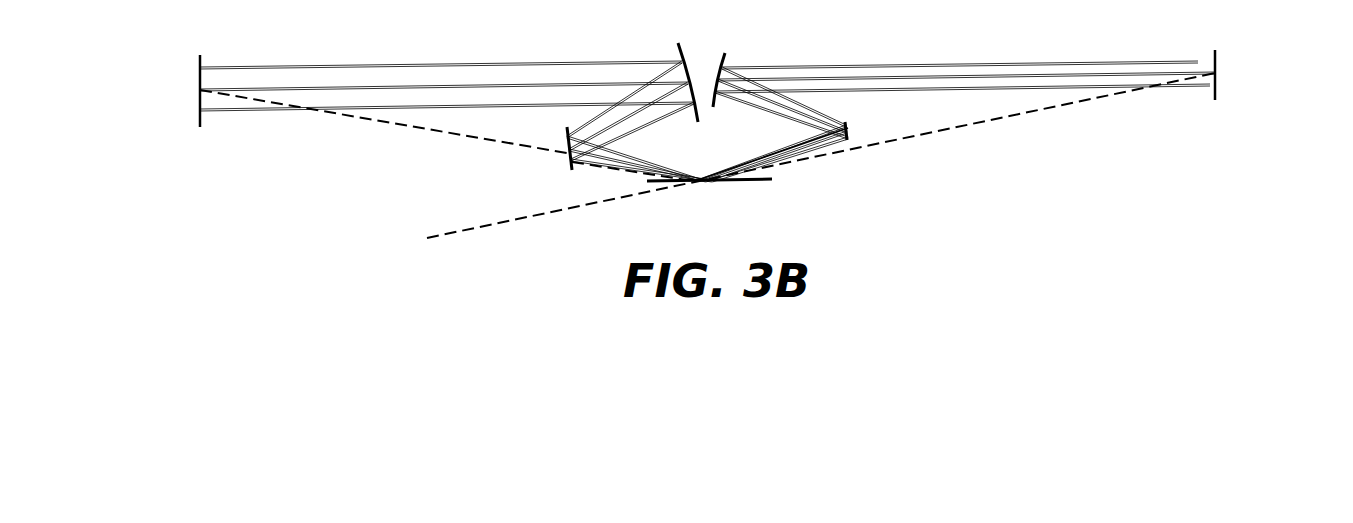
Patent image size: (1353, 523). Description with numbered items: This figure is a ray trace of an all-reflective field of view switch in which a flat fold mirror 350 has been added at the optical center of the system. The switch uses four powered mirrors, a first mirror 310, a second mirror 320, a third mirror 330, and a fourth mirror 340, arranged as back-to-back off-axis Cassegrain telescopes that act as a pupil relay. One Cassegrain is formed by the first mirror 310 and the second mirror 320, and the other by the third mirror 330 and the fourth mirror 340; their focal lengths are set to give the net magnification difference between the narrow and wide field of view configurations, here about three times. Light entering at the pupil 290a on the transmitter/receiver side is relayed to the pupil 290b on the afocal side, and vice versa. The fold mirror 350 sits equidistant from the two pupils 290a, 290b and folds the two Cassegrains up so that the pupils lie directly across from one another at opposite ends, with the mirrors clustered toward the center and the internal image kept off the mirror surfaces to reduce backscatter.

The pupil on the transmitter/receiver side 290a is at (200, 68).
The pupil on the afocal side 290b is at (1215, 70).
The first mirror 310 is at (678, 45).
The second mirror 320 is at (568, 168).
The third mirror 330 is at (846, 124).
The fourth mirror 340 is at (724, 53).
The flat fold mirror 350 is at (750, 180).